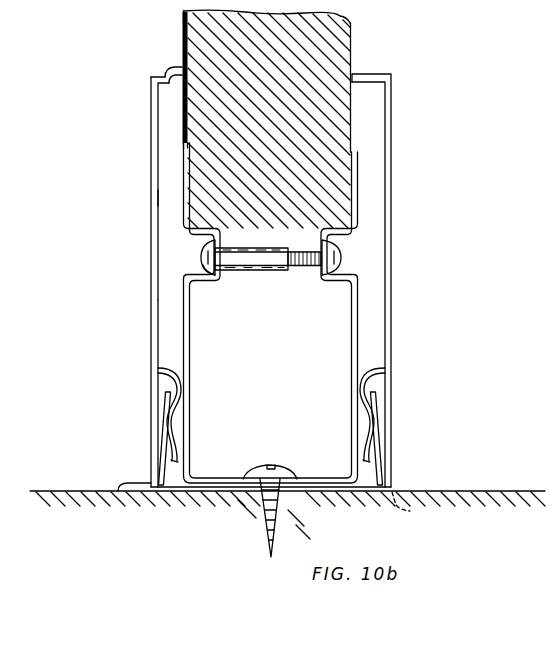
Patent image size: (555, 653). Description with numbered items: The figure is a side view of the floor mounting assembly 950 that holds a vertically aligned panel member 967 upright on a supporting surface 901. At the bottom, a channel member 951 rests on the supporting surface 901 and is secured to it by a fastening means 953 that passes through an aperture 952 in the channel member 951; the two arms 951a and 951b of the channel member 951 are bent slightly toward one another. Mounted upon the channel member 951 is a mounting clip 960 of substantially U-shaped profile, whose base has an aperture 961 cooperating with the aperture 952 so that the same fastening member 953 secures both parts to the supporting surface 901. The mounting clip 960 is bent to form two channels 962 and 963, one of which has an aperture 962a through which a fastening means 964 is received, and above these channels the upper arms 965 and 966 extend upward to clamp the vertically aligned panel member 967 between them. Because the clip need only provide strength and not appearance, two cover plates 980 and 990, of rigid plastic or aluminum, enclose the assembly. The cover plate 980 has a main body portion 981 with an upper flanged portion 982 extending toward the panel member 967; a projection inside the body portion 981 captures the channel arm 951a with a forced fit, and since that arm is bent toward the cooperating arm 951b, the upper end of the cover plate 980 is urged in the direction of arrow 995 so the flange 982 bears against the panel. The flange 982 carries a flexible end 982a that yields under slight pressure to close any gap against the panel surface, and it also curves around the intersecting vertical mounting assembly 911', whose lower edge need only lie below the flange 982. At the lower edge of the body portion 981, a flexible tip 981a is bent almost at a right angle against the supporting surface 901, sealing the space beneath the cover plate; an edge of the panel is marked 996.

The supporting surface 901 is at (77, 493).
The vertical mounting assembly 911' is at (153, 80).
The mounting assembly 950 is at (404, 115).
The channel member 951 is at (182, 493).
The channel arm 951a is at (167, 410).
The channel arm 951b is at (378, 406).
The aperture 952 is at (288, 494).
The fastening means 953 is at (278, 466).
The mounting clip 960 is at (183, 360).
The aperture 961 is at (262, 492).
The channel 962 is at (205, 257).
The aperture 962a is at (226, 276).
The channel 963 is at (343, 249).
The fastening means 964 is at (297, 247).
The upper arm 965 is at (183, 176).
The upper arm 966 is at (359, 192).
The vertically aligned panel member 967 is at (276, 103).
The cover plate 980 is at (144, 276).
The main body portion 981 is at (152, 332).
The flexible tip 981a is at (118, 497).
The upper flanged portion 982 is at (157, 73).
The flexible end 982a is at (168, 68).
The cover plate 990 is at (392, 338).
The arrow 995 is at (213, 198).
The panel top edge 996 is at (182, 17).